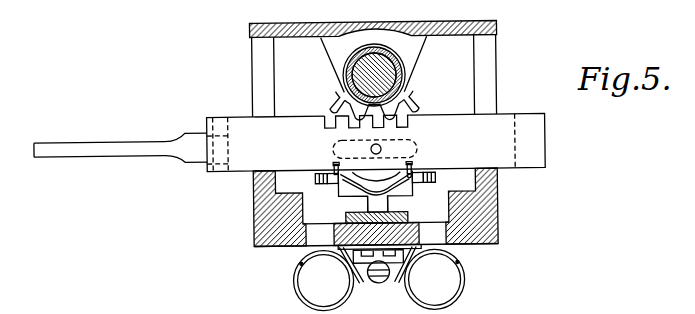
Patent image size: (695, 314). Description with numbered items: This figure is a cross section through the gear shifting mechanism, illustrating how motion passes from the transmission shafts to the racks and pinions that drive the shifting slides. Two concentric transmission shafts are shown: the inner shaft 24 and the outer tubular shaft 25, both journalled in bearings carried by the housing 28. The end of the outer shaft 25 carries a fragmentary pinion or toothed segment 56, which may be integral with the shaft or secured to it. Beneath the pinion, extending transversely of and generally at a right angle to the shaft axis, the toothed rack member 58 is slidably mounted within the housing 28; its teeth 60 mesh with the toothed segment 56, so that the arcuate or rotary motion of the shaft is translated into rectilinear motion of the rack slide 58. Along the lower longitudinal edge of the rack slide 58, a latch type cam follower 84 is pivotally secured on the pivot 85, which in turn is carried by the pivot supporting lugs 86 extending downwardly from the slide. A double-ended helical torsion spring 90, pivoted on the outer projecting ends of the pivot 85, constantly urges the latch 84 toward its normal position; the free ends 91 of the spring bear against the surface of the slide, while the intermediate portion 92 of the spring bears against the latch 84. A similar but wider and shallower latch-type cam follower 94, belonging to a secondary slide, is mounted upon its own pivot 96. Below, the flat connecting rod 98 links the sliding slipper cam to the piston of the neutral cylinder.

The transmission shaft 24 is at (405, 76).
The outer tubular shaft 25 is at (345, 77).
The housing 28 is at (240, 28).
The fragmentary pinion 56 is at (410, 97).
The toothed rack member 58 is at (498, 127).
The teeth 60 is at (415, 113).
The latch type cam follower 84 is at (388, 203).
The pivot 85 is at (334, 175).
The pivot supporting lugs 86 is at (353, 172).
The double-ended helical torsion spring 90 is at (418, 175).
The free ends of spring 91 is at (338, 172).
The intermediate portion of spring 92 is at (409, 174).
The latch-type cam follower 94 is at (342, 192).
The pivot 96 is at (317, 177).
The flat connecting rod 98 is at (407, 216).